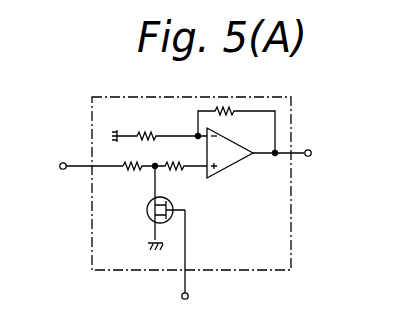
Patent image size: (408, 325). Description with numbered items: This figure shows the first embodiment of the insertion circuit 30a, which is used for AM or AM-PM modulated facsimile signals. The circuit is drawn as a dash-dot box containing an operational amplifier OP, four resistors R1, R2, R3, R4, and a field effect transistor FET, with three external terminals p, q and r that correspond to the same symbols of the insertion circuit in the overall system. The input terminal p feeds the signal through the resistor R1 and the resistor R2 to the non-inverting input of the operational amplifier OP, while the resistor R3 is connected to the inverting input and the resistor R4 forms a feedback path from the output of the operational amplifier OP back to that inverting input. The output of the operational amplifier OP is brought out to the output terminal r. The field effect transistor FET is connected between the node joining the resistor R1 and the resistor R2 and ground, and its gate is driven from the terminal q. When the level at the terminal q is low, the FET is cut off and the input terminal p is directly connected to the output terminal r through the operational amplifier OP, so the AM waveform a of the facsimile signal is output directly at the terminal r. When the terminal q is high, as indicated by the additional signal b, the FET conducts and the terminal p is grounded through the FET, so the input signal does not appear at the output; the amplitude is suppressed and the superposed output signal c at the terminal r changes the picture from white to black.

The insertion circuit 30a is at (293, 112).
The resistor R1 is at (139, 156).
The resistor R2 is at (181, 156).
The resistor R3 is at (159, 126).
The resistor R4 is at (236, 130).
The operational amplifier OP is at (232, 166).
The field effect transistor FET is at (187, 208).
The input terminal p is at (80, 163).
The terminal q is at (194, 260).
The output terminal r is at (289, 152).
The AM modulated facsimile signal waveform a is at (99, 167).
The additional signal waveform b is at (186, 254).
The superposed output signal waveform c is at (300, 160).